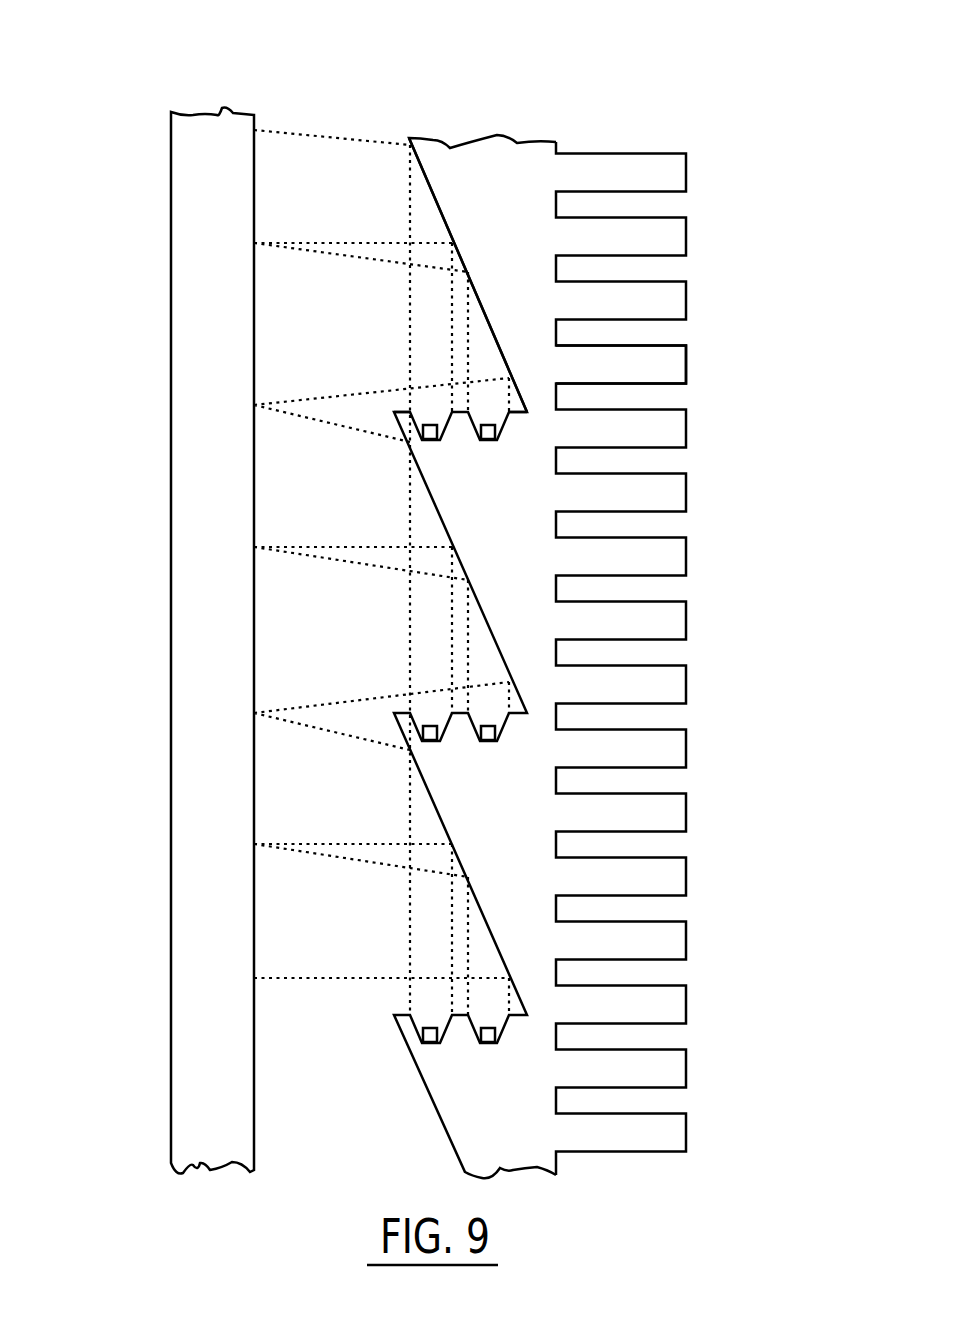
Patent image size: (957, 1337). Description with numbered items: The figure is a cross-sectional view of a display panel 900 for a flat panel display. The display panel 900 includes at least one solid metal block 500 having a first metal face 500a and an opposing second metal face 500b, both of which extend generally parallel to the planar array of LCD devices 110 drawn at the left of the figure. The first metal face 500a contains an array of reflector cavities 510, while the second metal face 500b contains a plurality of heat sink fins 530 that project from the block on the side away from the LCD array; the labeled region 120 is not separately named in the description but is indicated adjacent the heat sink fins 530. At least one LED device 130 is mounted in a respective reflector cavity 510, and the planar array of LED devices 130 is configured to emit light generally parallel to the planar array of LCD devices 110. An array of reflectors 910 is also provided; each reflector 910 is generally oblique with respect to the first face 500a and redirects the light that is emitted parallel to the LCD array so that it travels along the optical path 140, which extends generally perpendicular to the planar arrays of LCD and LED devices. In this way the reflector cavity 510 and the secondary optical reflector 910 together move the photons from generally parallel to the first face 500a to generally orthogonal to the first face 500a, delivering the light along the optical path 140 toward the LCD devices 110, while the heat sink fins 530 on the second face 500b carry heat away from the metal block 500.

The display panel 900 is at (160, 62).
The array of LCD devices 110 is at (182, 291).
The heat sink fin array 120 is at (722, 268).
The LED device 130 is at (487, 442).
The optical path 140 is at (283, 133).
The solid metal block 500 is at (505, 155).
The first metal face 500a is at (418, 173).
The second metal face 500b is at (692, 186).
The reflector cavity 510 is at (428, 410).
The heat sink fin 530 is at (687, 360).
The reflector 910 is at (450, 232).